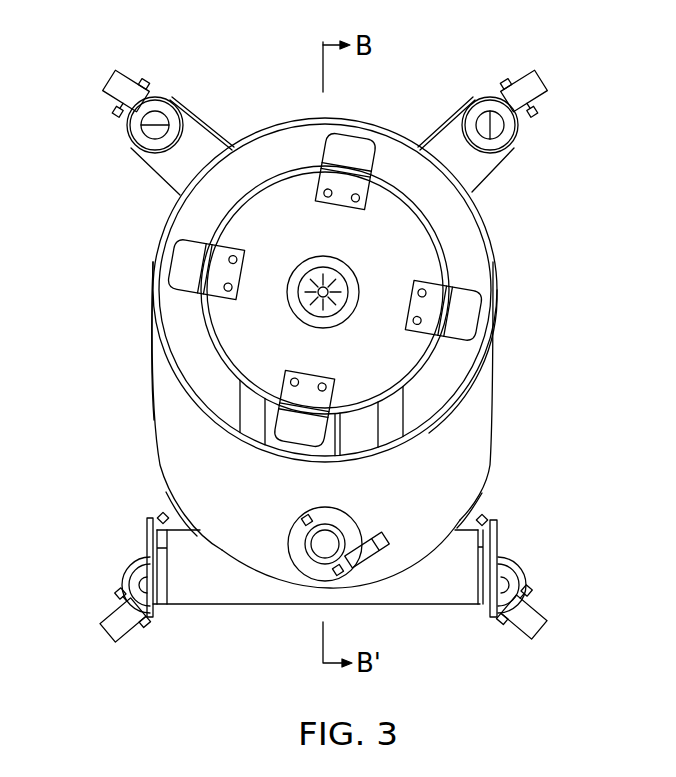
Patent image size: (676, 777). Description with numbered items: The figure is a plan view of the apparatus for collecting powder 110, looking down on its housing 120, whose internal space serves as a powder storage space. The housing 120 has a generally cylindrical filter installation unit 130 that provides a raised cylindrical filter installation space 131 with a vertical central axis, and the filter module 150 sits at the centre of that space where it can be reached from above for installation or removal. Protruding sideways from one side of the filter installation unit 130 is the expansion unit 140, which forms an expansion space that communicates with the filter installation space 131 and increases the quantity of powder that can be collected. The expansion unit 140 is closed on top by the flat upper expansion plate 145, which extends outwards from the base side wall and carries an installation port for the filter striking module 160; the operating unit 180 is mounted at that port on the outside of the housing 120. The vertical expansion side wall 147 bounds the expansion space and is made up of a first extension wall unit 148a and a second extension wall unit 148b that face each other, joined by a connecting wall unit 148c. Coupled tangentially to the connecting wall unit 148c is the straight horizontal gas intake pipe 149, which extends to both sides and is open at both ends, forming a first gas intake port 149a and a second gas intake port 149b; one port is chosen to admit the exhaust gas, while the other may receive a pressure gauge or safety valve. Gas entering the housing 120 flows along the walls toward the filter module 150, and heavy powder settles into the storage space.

The apparatus for collecting powder 110 is at (410, 118).
The housing 120 is at (155, 267).
The filter installation unit 130 is at (488, 252).
The filter installation space 131 is at (447, 230).
The expansion unit 140 is at (320, 472).
The upper expansion plate 145 is at (462, 398).
The expansion side wall 147 is at (482, 478).
The first extension wall unit 148a is at (152, 400).
The second extension wall unit 148b is at (493, 347).
The connecting wall unit 148c is at (222, 550).
The gas intake pipe 149 is at (417, 605).
The first gas intake port 149a is at (138, 560).
The second gas intake port 149b is at (498, 540).
The filter module 150 is at (292, 195).
The filter striking module 160 is at (370, 517).
The operating unit 180 is at (307, 567).